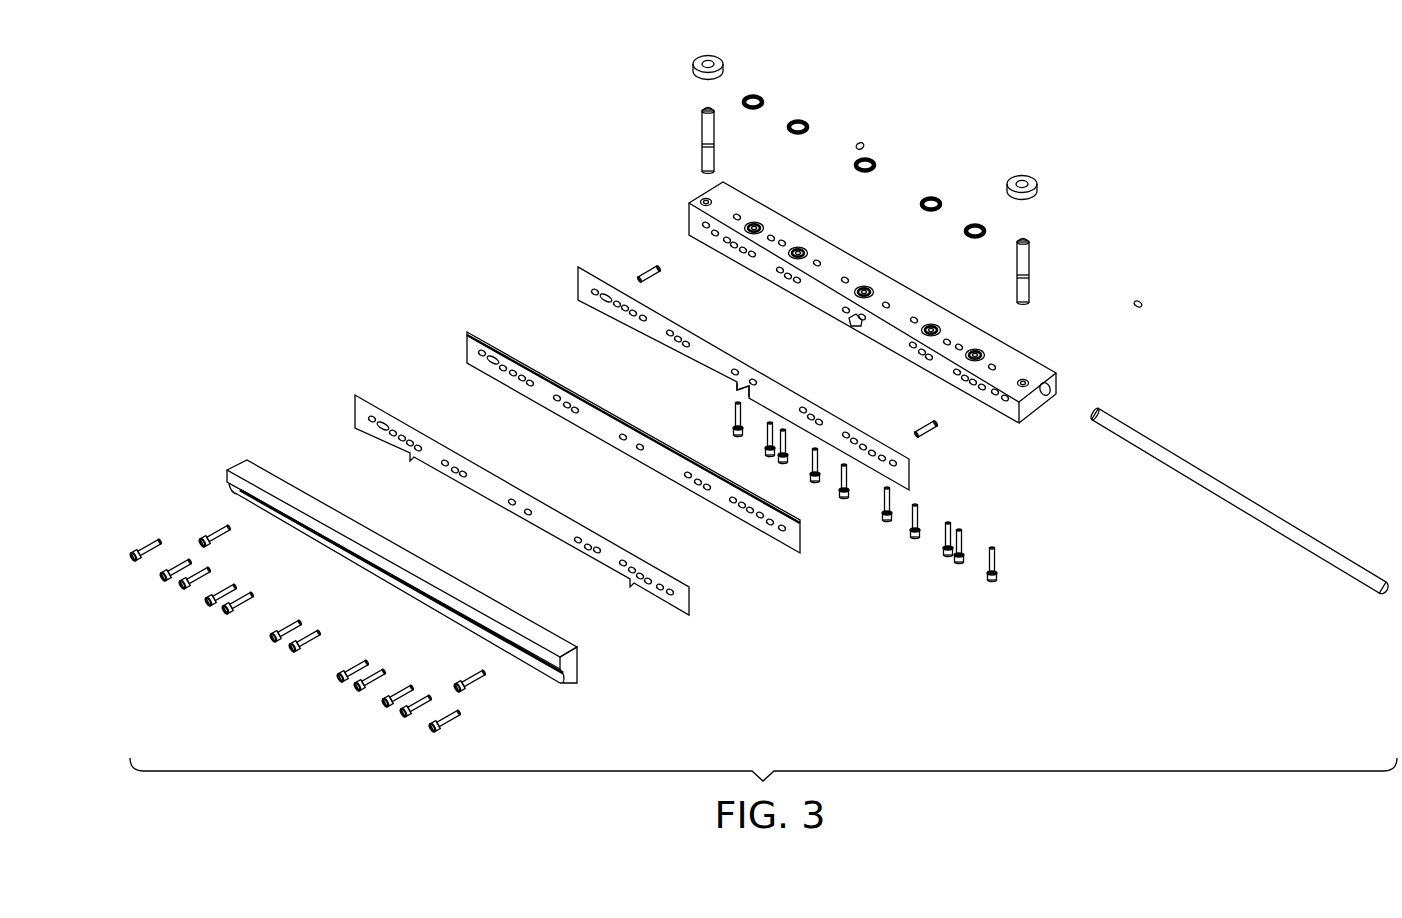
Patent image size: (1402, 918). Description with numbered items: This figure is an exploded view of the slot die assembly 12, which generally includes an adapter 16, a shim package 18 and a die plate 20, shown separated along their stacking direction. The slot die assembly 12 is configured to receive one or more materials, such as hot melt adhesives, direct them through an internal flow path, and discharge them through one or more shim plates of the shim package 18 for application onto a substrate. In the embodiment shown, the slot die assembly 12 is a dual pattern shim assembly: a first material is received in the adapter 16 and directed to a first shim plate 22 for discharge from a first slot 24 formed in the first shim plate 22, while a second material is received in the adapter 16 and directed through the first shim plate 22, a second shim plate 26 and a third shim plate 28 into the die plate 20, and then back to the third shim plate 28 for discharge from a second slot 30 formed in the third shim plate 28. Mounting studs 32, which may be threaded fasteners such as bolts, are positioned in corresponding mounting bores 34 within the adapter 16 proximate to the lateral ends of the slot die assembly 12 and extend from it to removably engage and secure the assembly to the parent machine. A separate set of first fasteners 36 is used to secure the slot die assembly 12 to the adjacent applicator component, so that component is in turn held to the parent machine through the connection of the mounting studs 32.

The slot die assembly 12 is at (371, 315).
The adapter 16 is at (1048, 373).
The shim package 18 is at (885, 472).
The die plate 20 is at (568, 677).
The first shim plate 22 is at (580, 283).
The first slot 24 is at (750, 389).
The second shim plate 26 is at (468, 351).
The third shim plate 28 is at (357, 414).
The second slot 30 is at (523, 519).
The mounting stud 32 is at (705, 105).
The mounting bore 34 is at (704, 201).
The first fastener 36 is at (957, 556).